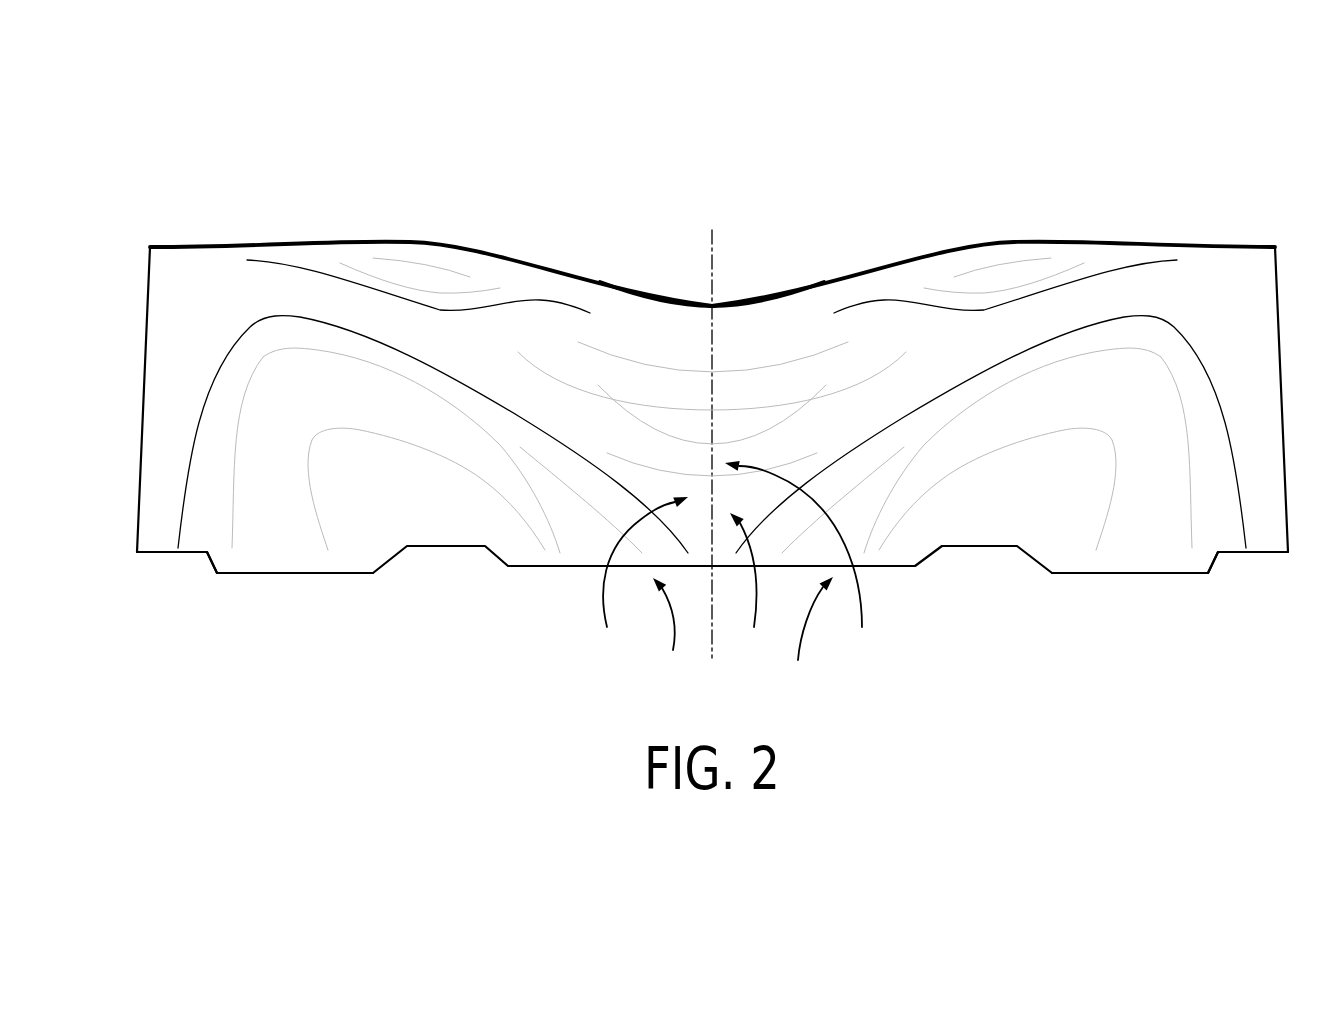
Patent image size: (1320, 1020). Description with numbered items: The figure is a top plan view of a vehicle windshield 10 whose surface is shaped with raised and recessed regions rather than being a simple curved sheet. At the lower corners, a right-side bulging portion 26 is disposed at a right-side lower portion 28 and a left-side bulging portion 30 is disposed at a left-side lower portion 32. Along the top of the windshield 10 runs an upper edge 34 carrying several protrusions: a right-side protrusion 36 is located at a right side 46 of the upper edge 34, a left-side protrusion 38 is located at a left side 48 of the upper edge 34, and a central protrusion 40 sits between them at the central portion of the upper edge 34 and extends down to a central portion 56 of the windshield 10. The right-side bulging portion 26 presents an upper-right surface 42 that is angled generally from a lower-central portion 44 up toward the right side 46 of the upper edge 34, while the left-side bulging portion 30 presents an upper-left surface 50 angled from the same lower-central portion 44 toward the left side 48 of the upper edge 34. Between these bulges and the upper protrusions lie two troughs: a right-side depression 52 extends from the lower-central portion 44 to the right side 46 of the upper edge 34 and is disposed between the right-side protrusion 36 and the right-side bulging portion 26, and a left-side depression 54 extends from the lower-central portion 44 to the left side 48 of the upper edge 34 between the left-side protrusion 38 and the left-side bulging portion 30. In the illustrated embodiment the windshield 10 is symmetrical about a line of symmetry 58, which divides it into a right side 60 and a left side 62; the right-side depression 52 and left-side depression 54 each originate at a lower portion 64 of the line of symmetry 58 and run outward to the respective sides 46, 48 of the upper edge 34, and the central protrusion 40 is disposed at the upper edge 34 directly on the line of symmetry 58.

The windshield 10 is at (147, 192).
The right-side bulging portion 26 is at (365, 482).
The right-side lower portion 28 is at (263, 558).
The left-side bulging portion 30 is at (1022, 497).
The left-side lower portion 32 is at (1140, 568).
The upper edge 34 is at (883, 279).
The right-side protrusion 36 is at (430, 255).
The left-side protrusion 38 is at (1028, 268).
The central protrusion 40 is at (730, 395).
The upper-right surface 42 is at (493, 410).
The lower-central portion 44 is at (749, 584).
The right side of the upper edge 46 is at (328, 220).
The left side of the upper edge 48 is at (1175, 244).
The upper-left surface 50 is at (893, 428).
The right-side depression 52 is at (463, 343).
The left-side depression 54 is at (947, 348).
The central portion 56 is at (800, 558).
The line of symmetry 58 is at (712, 283).
The right side 60 is at (668, 631).
The left side 62 is at (809, 634).
The lower portion of the line of symmetry 64 is at (640, 577).